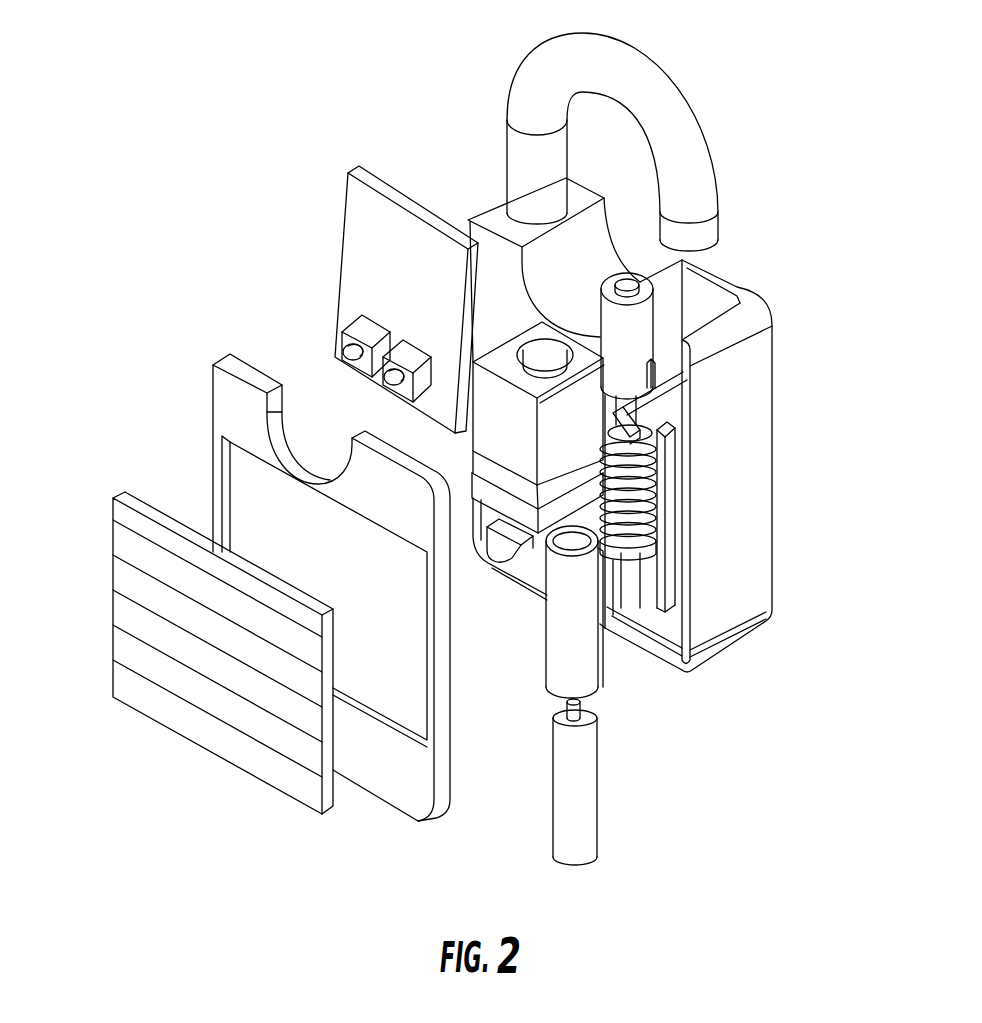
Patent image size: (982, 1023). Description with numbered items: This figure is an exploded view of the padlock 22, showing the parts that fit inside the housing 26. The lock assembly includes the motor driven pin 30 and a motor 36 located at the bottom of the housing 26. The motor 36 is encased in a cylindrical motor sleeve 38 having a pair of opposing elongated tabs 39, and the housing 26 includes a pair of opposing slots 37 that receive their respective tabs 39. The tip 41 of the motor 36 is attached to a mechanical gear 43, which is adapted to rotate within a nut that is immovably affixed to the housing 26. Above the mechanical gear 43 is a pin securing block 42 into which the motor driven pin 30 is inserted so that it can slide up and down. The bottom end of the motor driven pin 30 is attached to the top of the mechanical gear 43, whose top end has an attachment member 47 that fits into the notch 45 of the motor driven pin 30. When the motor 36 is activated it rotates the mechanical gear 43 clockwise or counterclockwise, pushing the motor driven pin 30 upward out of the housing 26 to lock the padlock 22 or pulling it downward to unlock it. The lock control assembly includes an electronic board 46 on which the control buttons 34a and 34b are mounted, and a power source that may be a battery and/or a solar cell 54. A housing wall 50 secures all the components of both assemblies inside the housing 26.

The padlock 22 is at (781, 110).
The housing 26 is at (759, 479).
The motor driven pin 30 is at (637, 327).
The control button 34a is at (340, 333).
The control button 34b is at (383, 394).
The motor 36 is at (598, 787).
The slot 37 is at (693, 655).
The motor sleeve 38 is at (583, 672).
The elongated tab 39 is at (599, 688).
The tip 41 is at (570, 703).
The pin securing block 42 is at (583, 428).
The mechanical gear 43 is at (655, 497).
The notch 45 is at (652, 372).
The electronic board 46 is at (350, 230).
The attachment member 47 is at (677, 432).
The housing wall 50 is at (228, 407).
The solar cell 54 is at (113, 680).